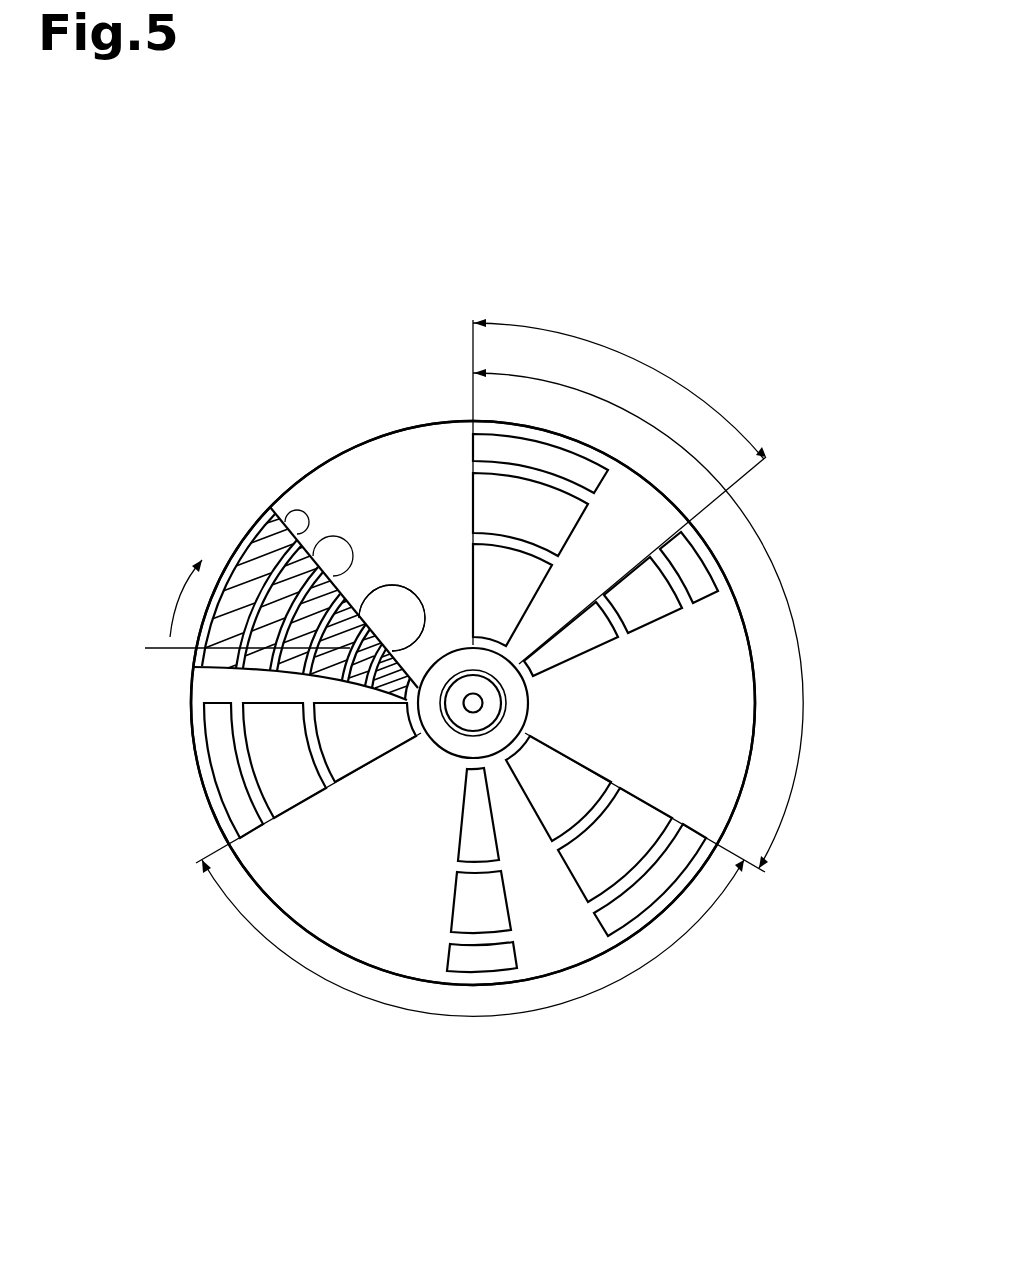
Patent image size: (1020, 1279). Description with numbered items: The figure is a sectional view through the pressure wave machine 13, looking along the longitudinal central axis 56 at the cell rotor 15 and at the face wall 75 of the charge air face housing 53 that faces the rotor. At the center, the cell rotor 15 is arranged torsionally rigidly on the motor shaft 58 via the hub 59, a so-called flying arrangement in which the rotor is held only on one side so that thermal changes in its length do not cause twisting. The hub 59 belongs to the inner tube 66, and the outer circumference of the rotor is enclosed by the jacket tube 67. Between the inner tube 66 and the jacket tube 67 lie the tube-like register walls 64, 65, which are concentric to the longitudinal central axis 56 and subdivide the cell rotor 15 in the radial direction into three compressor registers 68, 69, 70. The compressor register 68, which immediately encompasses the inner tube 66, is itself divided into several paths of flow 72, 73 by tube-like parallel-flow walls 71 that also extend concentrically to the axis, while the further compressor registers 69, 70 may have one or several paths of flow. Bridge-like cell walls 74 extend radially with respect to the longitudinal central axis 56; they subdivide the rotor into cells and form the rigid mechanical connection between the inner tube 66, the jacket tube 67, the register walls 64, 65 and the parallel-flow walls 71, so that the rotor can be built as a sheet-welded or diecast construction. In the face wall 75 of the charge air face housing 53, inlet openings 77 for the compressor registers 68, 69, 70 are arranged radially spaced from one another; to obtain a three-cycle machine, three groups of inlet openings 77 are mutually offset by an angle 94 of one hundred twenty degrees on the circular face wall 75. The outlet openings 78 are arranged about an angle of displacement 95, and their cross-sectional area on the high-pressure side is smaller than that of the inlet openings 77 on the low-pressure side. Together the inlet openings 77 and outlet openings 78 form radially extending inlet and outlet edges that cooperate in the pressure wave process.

The pressure wave machine 13 is at (338, 315).
The cell rotor 15 is at (200, 505).
The charge air face housing 53 is at (308, 435).
The longitudinal central axis 56 is at (473, 703).
The motor shaft 58 is at (507, 703).
The hub 59 is at (515, 712).
The register wall 64 is at (284, 623).
The register wall 65 is at (230, 649).
The inner tube 66 is at (425, 663).
The jacket tube 67 is at (262, 532).
The compressor register 68 is at (428, 600).
The compressor register 69 is at (347, 548).
The compressor register 70 is at (307, 507).
The parallel-flow wall 71 is at (417, 597).
The path of flow 72 is at (258, 690).
The path of flow 73 is at (292, 690).
The bridge-like cell wall 74 is at (273, 560).
The face wall 75 is at (447, 448).
The inlet opening 77 is at (533, 518).
The outlet opening 78 is at (640, 605).
The angle 94 is at (783, 583).
The angle of displacement 95 is at (603, 345).